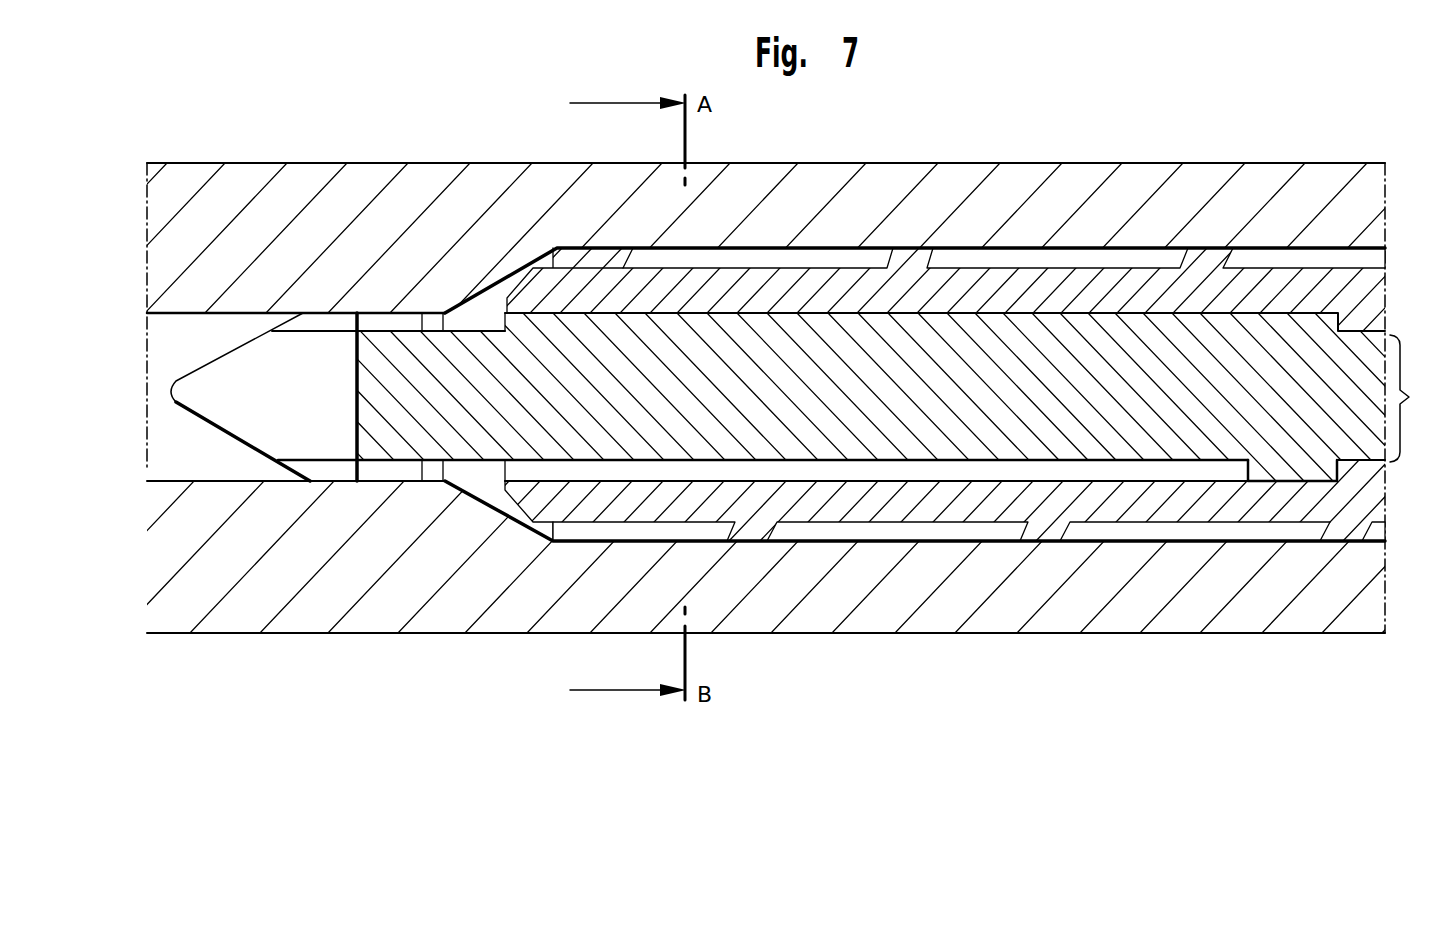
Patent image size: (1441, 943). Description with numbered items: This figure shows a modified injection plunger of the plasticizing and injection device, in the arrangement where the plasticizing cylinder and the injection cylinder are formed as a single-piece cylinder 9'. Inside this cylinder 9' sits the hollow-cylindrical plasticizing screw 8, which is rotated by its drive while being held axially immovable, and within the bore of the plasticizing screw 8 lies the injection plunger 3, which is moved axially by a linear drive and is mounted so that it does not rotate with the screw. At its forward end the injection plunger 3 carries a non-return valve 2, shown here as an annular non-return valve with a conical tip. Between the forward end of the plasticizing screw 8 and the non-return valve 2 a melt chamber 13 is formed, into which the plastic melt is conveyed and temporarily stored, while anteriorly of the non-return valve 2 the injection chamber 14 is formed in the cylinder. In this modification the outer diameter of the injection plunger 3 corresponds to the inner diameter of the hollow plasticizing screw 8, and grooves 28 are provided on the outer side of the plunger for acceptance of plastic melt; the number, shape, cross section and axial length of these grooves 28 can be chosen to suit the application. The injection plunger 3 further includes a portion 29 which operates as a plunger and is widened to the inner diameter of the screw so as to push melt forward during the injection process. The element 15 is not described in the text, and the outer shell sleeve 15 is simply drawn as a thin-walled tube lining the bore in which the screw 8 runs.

The non-return valve 2 is at (236, 450).
The injection plunger 3 is at (817, 397).
The plasticizing screw 8 is at (1365, 289).
The single-piece cylinder 9' is at (733, 400).
The melt chamber 13 is at (483, 302).
The injection chamber 14 is at (198, 326).
The outer shell tube 15 is at (790, 258).
The grooves 28 is at (818, 472).
The portion operating as plunger 29 is at (1288, 472).